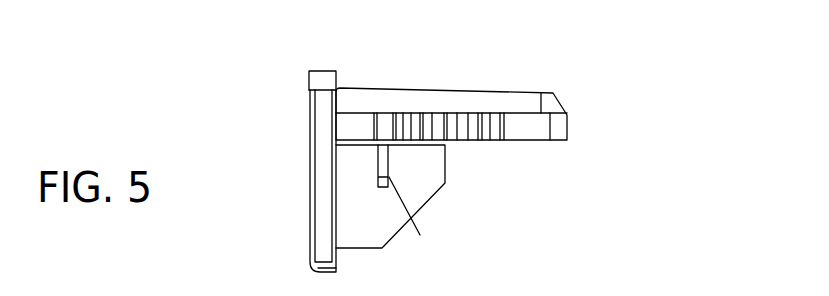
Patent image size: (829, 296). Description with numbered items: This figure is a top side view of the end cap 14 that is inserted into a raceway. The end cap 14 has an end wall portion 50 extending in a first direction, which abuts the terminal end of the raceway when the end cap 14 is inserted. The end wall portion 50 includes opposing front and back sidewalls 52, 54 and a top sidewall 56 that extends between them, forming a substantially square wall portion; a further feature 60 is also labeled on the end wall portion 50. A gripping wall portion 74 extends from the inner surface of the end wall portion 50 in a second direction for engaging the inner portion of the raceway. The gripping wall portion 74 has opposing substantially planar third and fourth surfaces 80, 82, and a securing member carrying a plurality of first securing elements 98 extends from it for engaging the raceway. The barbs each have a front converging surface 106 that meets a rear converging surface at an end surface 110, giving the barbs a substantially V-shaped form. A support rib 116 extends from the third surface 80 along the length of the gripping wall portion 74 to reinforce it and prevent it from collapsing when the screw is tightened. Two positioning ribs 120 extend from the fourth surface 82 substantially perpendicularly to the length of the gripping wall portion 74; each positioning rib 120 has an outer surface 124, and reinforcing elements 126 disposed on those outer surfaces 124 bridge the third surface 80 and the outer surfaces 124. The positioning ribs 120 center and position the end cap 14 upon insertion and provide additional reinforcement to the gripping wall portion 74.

The end cap 14 is at (593, 93).
The end wall portion 50 is at (297, 136).
The front sidewall 52 is at (325, 272).
The back sidewall 54 is at (322, 70).
The top sidewall 56 is at (325, 193).
The cap portion 60 is at (325, 89).
The gripping wall portion 74 is at (530, 83).
The third surface 80 is at (383, 115).
The fourth surface 82 is at (535, 142).
The first securing elements 98 is at (477, 128).
The front converging surface 106 is at (440, 136).
The end surface 110 is at (429, 130).
The support rib 116 is at (397, 98).
The positioning ribs 120 is at (368, 250).
The outer surface 124 is at (423, 186).
The reinforcing elements 126 is at (430, 220).